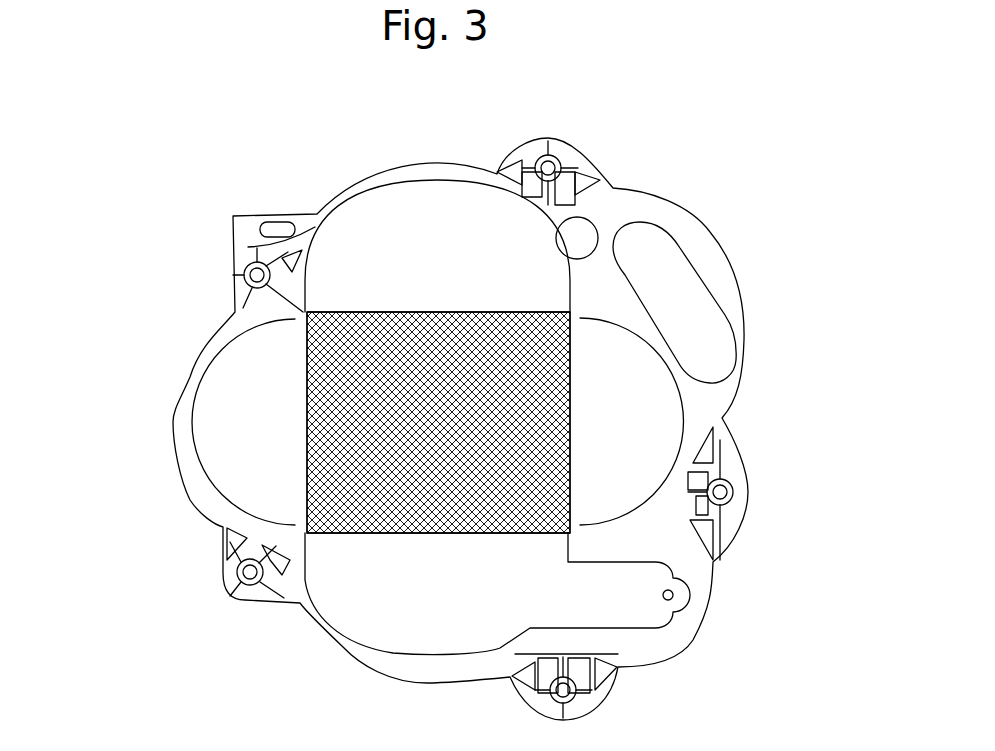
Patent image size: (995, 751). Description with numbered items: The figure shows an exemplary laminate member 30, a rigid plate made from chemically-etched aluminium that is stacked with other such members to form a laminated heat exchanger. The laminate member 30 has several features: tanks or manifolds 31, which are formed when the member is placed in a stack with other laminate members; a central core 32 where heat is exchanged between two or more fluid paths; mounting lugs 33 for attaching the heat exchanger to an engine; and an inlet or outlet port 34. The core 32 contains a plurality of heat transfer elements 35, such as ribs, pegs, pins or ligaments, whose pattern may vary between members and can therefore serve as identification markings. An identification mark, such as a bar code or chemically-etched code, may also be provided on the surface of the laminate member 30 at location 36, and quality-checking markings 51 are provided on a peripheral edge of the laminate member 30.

The laminate member 30 is at (138, 222).
The tanks or manifolds 31 is at (423, 210).
The core 32 is at (306, 471).
The mounting lugs 33 is at (257, 270).
The inlet or outlet port 34 is at (683, 288).
The heat transfer elements 35 is at (405, 413).
The location of identification mark 36 is at (595, 231).
The quality-checking markings 51 is at (745, 327).